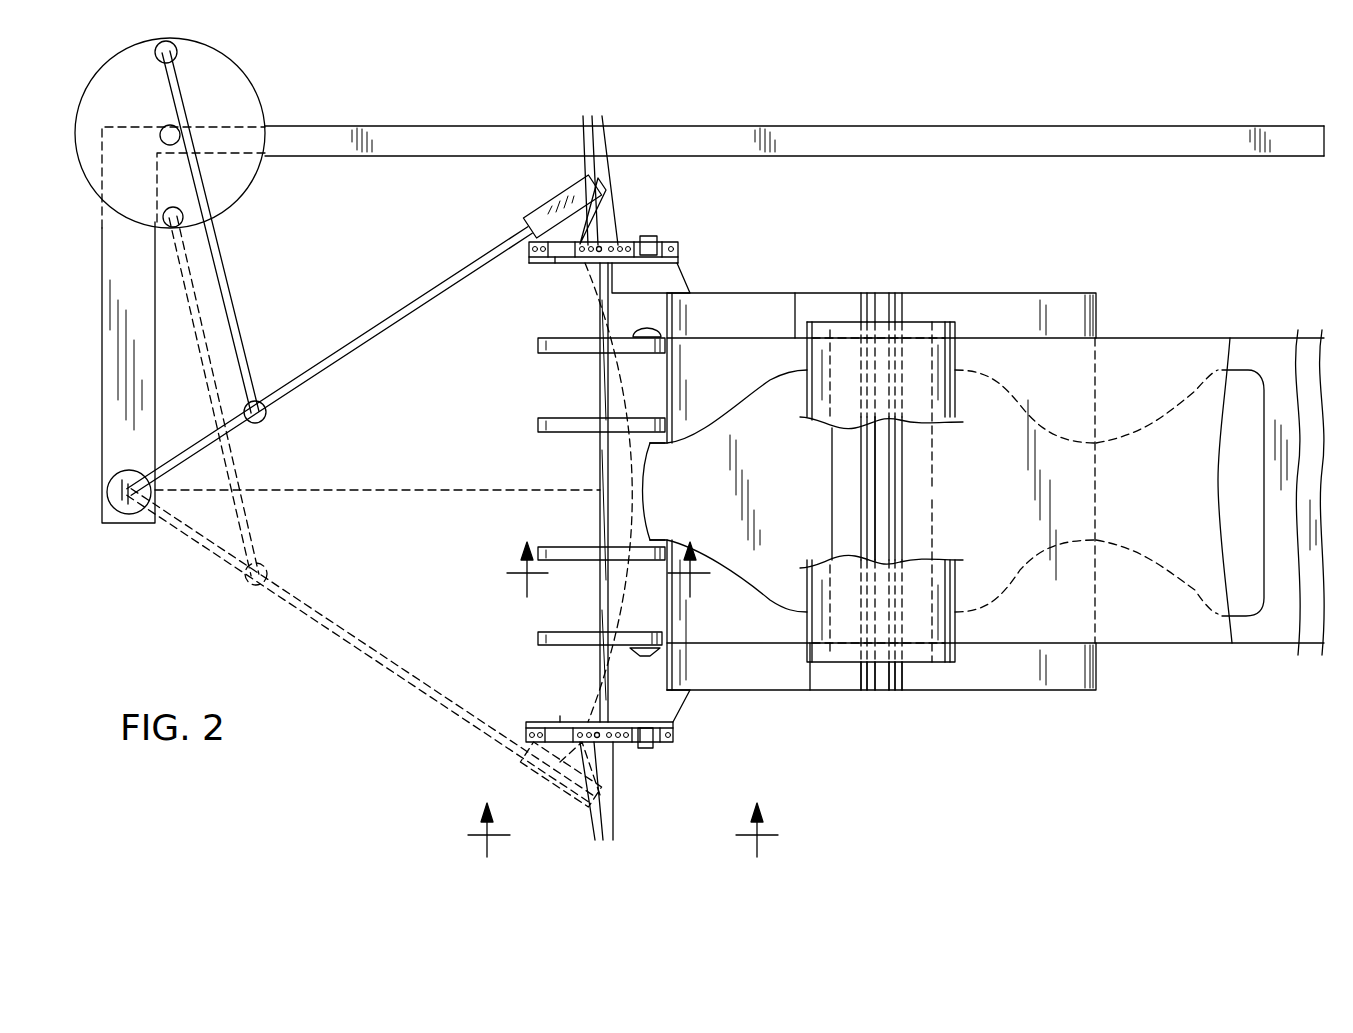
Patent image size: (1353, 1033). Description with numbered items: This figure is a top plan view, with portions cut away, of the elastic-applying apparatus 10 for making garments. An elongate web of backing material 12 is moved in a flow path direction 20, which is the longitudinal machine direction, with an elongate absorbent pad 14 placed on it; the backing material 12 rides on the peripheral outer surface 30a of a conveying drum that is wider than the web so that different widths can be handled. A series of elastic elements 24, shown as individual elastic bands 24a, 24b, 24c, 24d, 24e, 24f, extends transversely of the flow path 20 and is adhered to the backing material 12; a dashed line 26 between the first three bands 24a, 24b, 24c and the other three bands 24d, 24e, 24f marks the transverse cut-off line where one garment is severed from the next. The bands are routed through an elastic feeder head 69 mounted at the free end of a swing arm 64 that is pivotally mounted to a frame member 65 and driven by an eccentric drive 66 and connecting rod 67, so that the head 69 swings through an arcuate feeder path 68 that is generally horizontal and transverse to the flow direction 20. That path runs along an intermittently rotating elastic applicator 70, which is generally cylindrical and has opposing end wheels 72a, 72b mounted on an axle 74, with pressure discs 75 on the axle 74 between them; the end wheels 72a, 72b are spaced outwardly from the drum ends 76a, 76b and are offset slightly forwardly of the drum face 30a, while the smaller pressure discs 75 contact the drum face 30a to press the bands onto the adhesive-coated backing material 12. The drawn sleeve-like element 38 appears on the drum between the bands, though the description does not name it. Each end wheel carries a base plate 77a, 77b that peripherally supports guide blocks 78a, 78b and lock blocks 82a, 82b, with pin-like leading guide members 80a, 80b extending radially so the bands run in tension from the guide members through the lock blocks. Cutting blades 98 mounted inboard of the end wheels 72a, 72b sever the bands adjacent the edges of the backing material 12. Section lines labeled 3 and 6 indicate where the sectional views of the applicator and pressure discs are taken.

The tow vehicle attachment assembly 10 is at (1078, 267).
The backing material 12 is at (790, 330).
The absorbent pad 14 is at (710, 432).
The flow path direction 20 is at (1195, 490).
The elastic elements 24 is at (683, 272).
The elastic band 24a is at (860, 675).
The elastic band 24b is at (871, 690).
The elastic band 24c is at (878, 680).
The elastic band 24d is at (898, 690).
The elastic band 24e is at (900, 683).
The elastic band 24f is at (905, 672).
The dashed line 26 is at (880, 462).
The peripheral outer surface 30a is at (1096, 320).
The sleeve 38 is at (957, 393).
The swing arm 64 is at (383, 317).
The frame member 65 is at (147, 313).
The eccentric drive 66 is at (245, 98).
The connecting rod 67 is at (228, 293).
The arcuate feeder path 68 is at (643, 538).
The elastic feeder head 69 is at (535, 222).
The elastic applicator 70 is at (629, 752).
The end wheel 72a is at (525, 721).
The end wheel 72b is at (528, 270).
The axle 74 is at (600, 488).
The pressure discs 75 is at (550, 632).
The drum end 76a is at (810, 690).
The drum end 76b is at (793, 293).
The base plate 77a is at (630, 710).
The base plate 77b is at (553, 263).
The guide blocks 78a is at (672, 742).
The guide blocks 78b is at (618, 247).
The leading guide members 80a is at (603, 807).
The leading guide members 80b is at (602, 404).
The lock blocks 82a is at (650, 750).
The lock blocks 82b is at (655, 236).
The cutting blades 98 is at (646, 327).
The section line 3- 3 is at (618, 840).
The section line 6- 6 is at (606, 577).